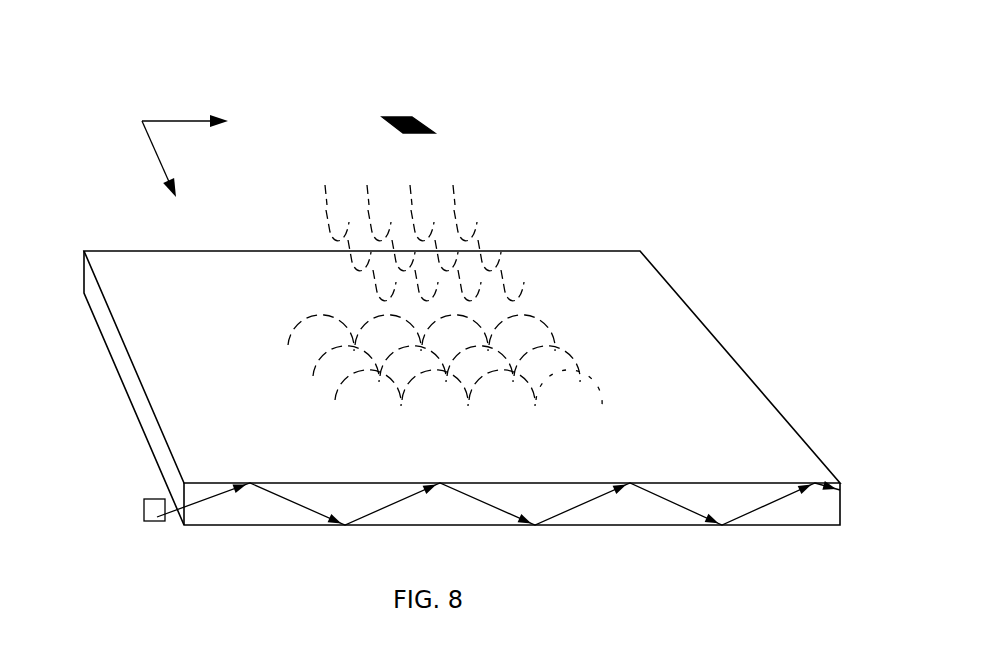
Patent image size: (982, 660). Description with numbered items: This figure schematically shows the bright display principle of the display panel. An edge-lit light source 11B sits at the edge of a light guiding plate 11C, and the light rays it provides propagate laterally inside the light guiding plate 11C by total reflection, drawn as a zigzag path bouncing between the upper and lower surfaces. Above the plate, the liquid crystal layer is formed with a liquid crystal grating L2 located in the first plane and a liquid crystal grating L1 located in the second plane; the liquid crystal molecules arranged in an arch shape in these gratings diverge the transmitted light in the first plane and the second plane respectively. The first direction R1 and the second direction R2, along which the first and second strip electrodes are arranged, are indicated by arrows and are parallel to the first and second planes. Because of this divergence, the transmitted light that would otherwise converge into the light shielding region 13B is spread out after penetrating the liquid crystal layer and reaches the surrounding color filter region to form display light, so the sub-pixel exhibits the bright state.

The light guiding plate 11C is at (672, 282).
The edge-lit light source 11B is at (144, 508).
The light shielding region 13B is at (400, 117).
The liquid crystal grating L1 is at (270, 312).
The liquid crystal grating L2 is at (515, 218).
The first direction R1 is at (147, 159).
The second direction R2 is at (185, 107).